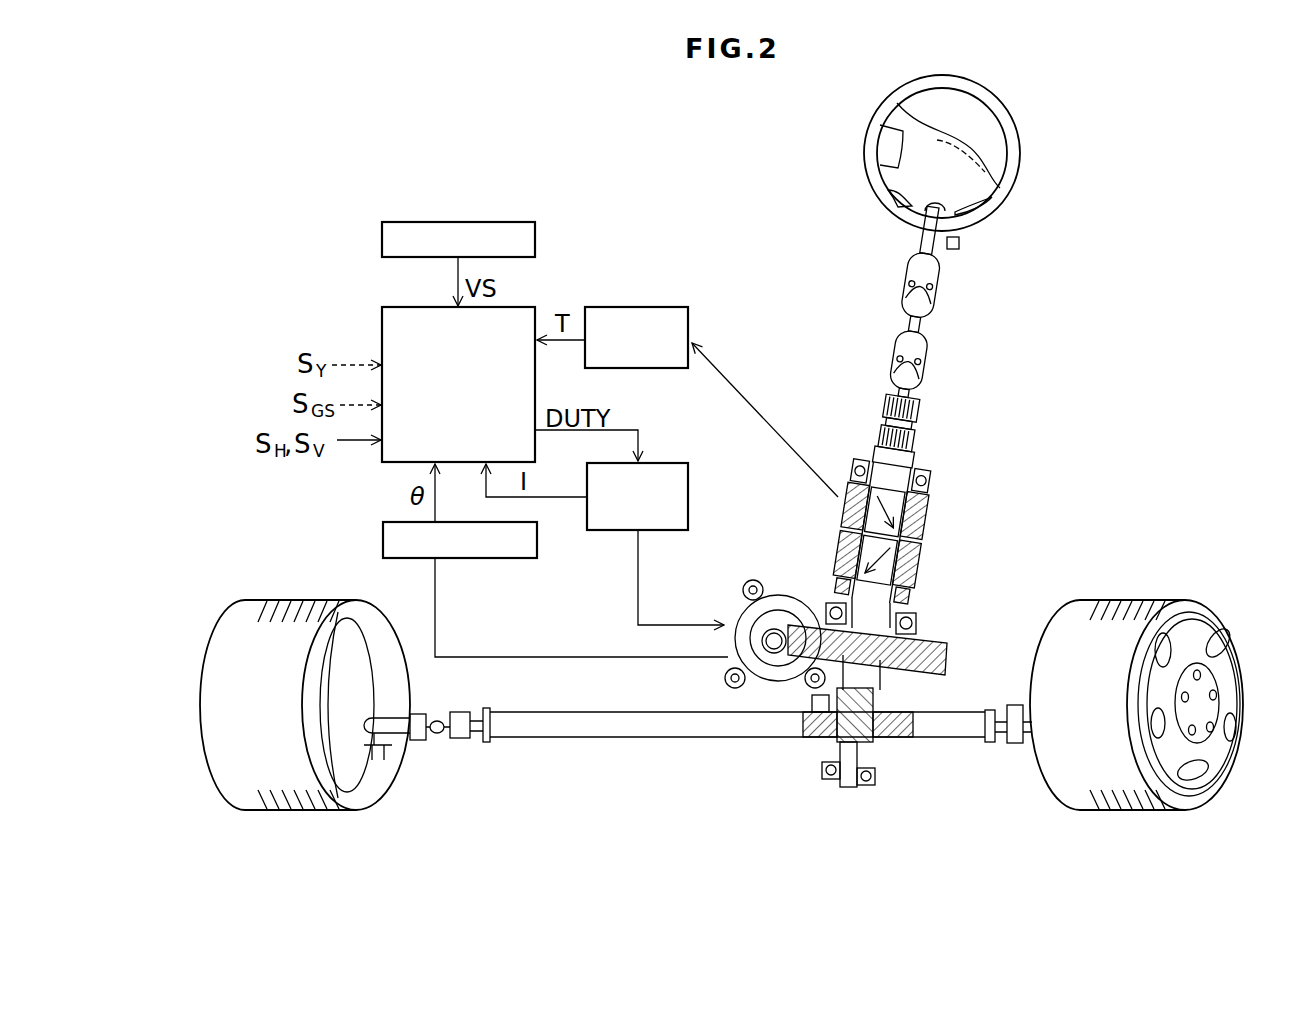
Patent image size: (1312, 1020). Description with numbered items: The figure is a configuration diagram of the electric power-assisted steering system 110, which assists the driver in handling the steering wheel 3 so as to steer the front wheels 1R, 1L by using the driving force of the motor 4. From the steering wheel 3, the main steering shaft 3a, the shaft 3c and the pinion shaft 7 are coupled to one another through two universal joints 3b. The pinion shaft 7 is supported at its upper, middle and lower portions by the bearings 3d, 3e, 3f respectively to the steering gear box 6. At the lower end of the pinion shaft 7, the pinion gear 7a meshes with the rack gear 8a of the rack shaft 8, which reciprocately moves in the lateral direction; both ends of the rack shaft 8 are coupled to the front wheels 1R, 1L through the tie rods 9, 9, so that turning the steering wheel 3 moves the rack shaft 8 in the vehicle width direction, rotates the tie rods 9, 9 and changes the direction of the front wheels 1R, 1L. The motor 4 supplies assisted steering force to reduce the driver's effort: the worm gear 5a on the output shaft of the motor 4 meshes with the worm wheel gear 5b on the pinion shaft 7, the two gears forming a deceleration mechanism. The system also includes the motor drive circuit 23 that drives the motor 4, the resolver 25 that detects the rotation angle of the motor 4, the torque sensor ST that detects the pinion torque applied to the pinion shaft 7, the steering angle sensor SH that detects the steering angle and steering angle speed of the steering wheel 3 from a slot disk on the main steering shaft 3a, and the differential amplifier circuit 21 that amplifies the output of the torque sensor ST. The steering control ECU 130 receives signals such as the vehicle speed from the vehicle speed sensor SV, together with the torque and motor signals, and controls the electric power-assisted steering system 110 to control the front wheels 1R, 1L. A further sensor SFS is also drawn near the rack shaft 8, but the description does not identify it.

The electric power-assisted steering system 110 is at (1157, 127).
The steering wheel 3 is at (1020, 160).
The main steering shaft 3a is at (932, 248).
The universal joint 3b is at (938, 298).
The shaft 3c is at (918, 325).
The bearing 3d is at (920, 477).
The bearing 3e is at (917, 614).
The bearing 3f is at (876, 777).
The motor 4 is at (737, 606).
The worm gear 5a is at (772, 628).
The worm wheel gear 5b is at (948, 644).
The steering gear box 6 is at (828, 800).
The pinion shaft 7 is at (872, 688).
The pinion gear 7a is at (868, 730).
The rack shaft 8 is at (566, 738).
The rack gear 8a is at (820, 735).
The tie rod 9 is at (422, 741).
The front wheel 1R is at (272, 600).
The front wheel 1L is at (1220, 613).
The differential amplifier circuit 21 is at (660, 307).
The motor drive circuit 23 is at (666, 463).
The resolver 25 is at (480, 558).
The steering control ECU 130 is at (382, 327).
The vehicle speed sensor SV is at (500, 222).
The steering angle sensor SH is at (960, 243).
The torque sensor ST is at (938, 544).
The rack stroke sensor SFS is at (812, 704).